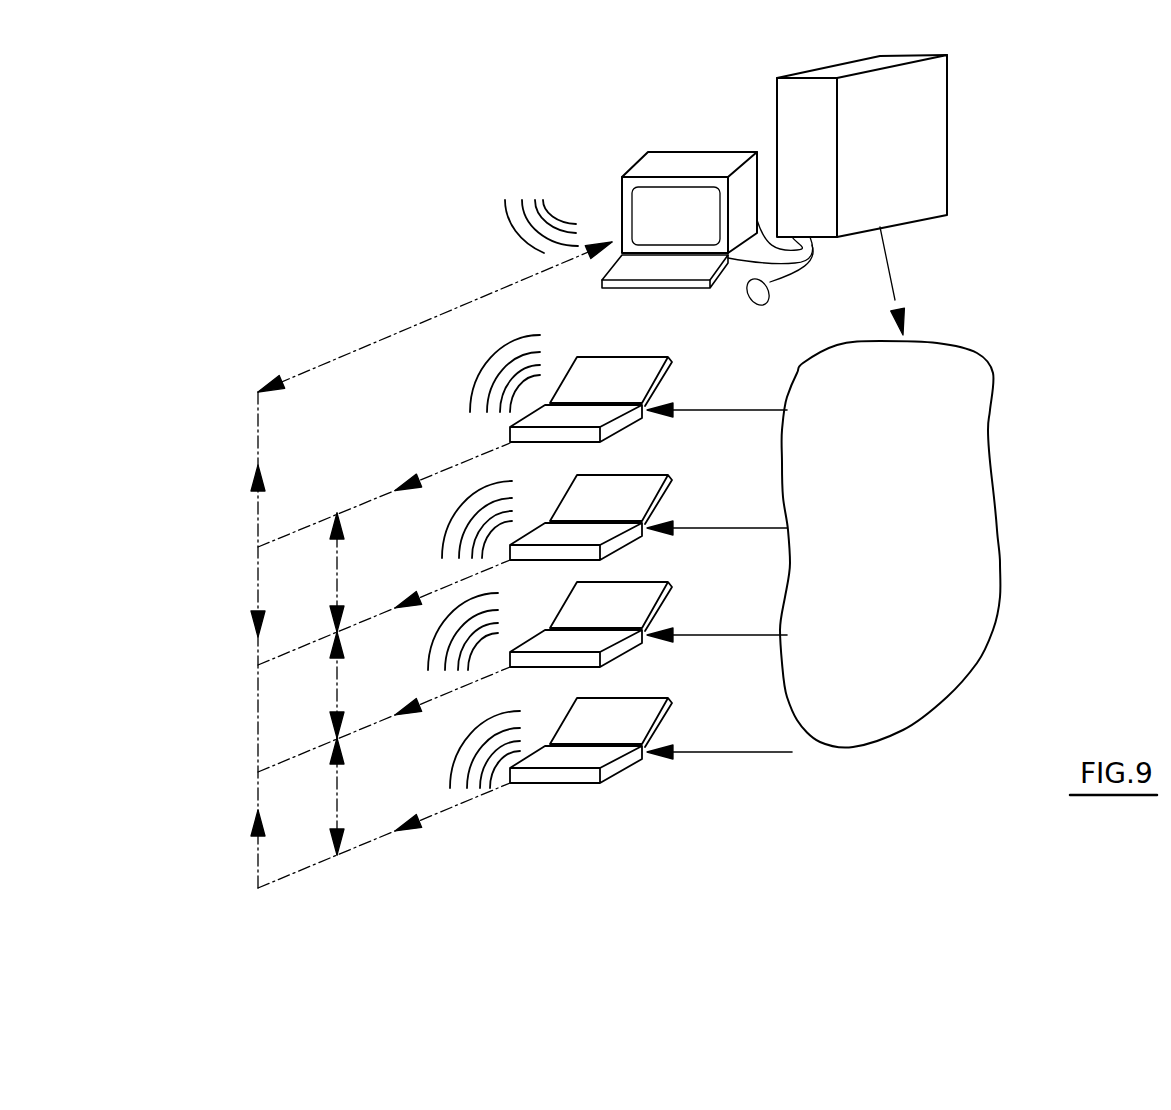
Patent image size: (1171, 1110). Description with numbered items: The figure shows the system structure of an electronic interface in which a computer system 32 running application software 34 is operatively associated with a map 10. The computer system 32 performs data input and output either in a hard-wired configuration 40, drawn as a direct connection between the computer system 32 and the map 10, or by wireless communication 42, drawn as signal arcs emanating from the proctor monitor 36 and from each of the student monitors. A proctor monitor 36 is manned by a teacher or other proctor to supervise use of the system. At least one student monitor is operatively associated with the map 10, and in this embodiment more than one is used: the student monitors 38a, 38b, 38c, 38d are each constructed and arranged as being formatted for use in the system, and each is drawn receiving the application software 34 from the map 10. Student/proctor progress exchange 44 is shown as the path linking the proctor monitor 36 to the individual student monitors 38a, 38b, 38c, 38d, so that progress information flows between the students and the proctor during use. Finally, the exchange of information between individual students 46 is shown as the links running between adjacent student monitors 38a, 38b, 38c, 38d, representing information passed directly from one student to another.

The map 10 is at (920, 512).
The computer system 32 is at (947, 133).
The application software 34 is at (745, 408).
The proctor monitor 36 is at (638, 157).
The student monitor 38a is at (667, 367).
The student monitor 38b is at (668, 484).
The student monitor 38c is at (663, 603).
The student monitor 38d is at (665, 720).
The hard-wired configuration 40 is at (900, 297).
The wireless communication 42 is at (508, 227).
The student/proctor progress exchange 44 is at (440, 313).
The exchange of information between individual students 46 is at (337, 575).